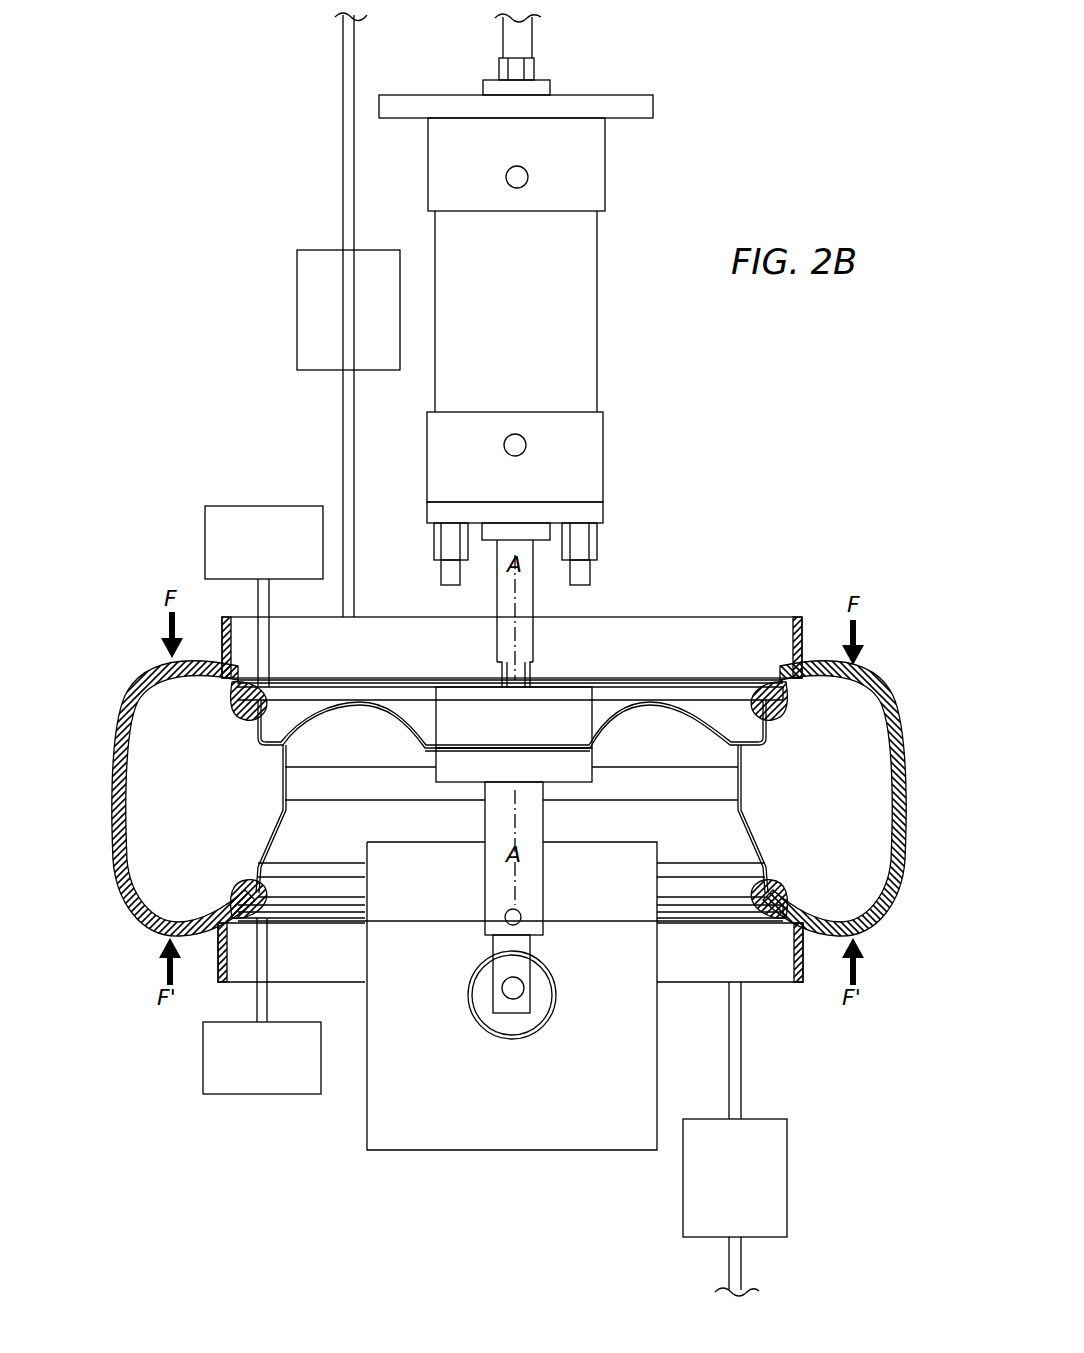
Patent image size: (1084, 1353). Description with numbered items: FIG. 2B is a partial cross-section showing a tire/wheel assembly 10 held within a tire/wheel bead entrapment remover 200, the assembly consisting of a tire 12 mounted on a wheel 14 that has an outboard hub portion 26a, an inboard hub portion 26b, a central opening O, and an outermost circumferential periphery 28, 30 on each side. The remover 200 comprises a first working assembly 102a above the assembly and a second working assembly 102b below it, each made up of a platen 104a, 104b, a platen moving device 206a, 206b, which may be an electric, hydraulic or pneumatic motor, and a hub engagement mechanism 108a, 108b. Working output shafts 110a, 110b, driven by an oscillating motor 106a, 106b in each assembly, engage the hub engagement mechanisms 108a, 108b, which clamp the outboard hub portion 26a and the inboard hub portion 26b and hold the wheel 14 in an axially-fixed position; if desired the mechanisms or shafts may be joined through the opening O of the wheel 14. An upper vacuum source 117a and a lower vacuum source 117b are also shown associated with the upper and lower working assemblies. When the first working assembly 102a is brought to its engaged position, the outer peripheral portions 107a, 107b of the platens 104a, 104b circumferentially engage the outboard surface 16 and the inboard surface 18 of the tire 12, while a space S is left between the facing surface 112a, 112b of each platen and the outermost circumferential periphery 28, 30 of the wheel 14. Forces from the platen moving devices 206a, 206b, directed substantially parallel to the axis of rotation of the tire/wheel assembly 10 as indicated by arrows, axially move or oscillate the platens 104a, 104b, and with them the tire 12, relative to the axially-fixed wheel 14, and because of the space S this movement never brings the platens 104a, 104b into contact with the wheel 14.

The tire/wheel bead entrapment remover 200 is at (229, 57).
The platen moving device 206a is at (297, 282).
The platen moving device 206b is at (787, 1207).
The oscillating motor 106a is at (580, 465).
The oscillating motor 106b is at (487, 1003).
The working output shaft 110a is at (530, 603).
The working output shaft 110b is at (497, 885).
The upper vacuum source 117a is at (205, 516).
The lower vacuum source 117b is at (203, 1077).
The tire/wheel assembly 10 is at (137, 622).
The tire 12 is at (135, 672).
The wheel 14 is at (708, 846).
The outboard surface 16 is at (240, 700).
The inboard surface 18 is at (238, 960).
The outboard hub portion 26a is at (593, 745).
The inboard hub portion 26b is at (548, 757).
The outermost circumferential periphery 28 is at (343, 692).
The outermost circumferential periphery 30 is at (348, 912).
The first working assembly 102a is at (718, 560).
The second working assembly 102b is at (765, 1010).
The platen 104a is at (803, 650).
The platen 104b is at (790, 985).
The outer peripheral portion 107a is at (816, 626).
The outer peripheral portion 107b is at (803, 962).
The hub engagement mechanism 108a is at (470, 720).
The hub engagement mechanism 108b is at (455, 770).
The facing surface 112a is at (697, 682).
The facing surface 112b is at (683, 916).
The space S is at (757, 683).
The opening O is at (537, 757).